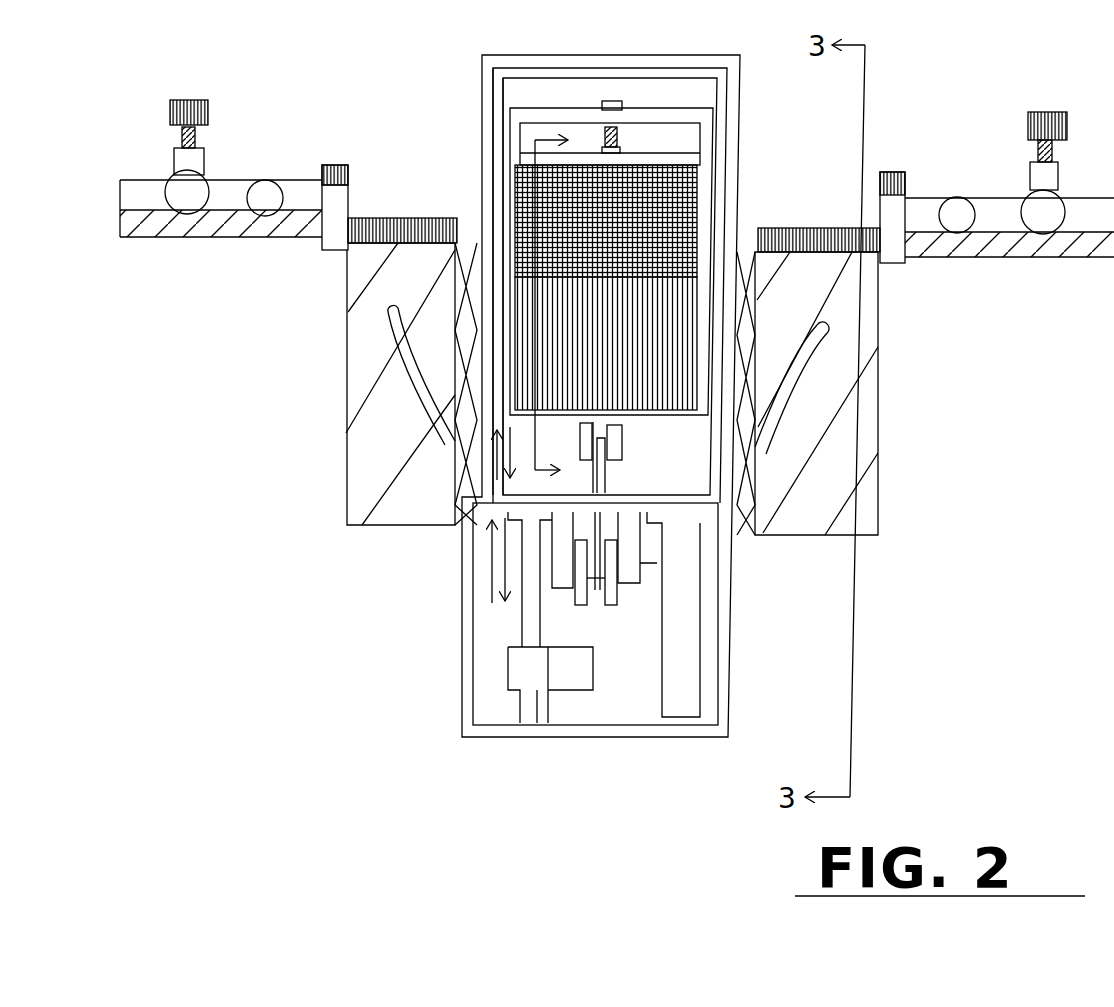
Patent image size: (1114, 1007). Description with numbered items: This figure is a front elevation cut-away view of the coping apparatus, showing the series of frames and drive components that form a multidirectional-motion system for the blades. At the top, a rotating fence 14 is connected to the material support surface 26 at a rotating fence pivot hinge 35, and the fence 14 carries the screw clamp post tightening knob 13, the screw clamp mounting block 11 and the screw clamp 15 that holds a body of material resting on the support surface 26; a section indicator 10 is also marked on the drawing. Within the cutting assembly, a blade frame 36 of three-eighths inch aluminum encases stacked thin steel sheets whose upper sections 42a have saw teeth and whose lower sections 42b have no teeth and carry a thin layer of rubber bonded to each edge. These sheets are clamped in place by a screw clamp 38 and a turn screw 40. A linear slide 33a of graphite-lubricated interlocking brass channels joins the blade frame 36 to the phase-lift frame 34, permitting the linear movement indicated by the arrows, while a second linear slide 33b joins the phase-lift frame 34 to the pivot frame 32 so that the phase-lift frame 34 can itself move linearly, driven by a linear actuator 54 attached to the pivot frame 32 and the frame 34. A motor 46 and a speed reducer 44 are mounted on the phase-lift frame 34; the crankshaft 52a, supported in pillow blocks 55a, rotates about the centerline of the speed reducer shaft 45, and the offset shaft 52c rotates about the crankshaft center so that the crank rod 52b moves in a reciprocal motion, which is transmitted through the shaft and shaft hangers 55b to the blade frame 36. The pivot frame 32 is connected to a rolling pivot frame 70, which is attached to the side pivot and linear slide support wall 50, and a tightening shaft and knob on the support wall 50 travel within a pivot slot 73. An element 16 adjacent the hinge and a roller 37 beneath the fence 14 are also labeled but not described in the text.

The section view direction indicator 10 is at (569, 309).
The screw clamp mounting block 11 is at (187, 160).
The screw clamp post tightening knob 13 is at (187, 193).
The rotating fence 14 is at (151, 198).
The screw clamp 15 is at (188, 112).
The knurled adjustment nut 16 is at (337, 160).
The material support surface 26 is at (1035, 243).
The pivot frame 32 is at (737, 73).
The linear slide 33a is at (503, 150).
The linear slide 33b is at (493, 118).
The phase-lift frame 34 is at (720, 100).
The rotating fence pivot hinge 35 is at (337, 198).
The blade frame 36 is at (687, 118).
The roller 37 is at (265, 213).
The screw clamp 38 is at (682, 160).
The turn screw 40 is at (623, 137).
The upper sections of metal sheets 42a is at (666, 255).
The lower sections of metal sheets 42b is at (665, 372).
The speed reducer 44 is at (688, 565).
The speed reducer shaft 45 is at (657, 570).
The motor 46 is at (688, 644).
The linear slide support frame 50 is at (383, 448).
The crankshaft 52a is at (580, 596).
The crank rod 52b is at (600, 478).
The offset shaft 52c is at (612, 582).
The linear actuator 54 is at (522, 663).
The pillow blocks 55a is at (560, 552).
The shaft and shaft hangers 55b is at (613, 434).
The pivot frame 70 is at (458, 418).
The pivot slot 73 is at (405, 362).